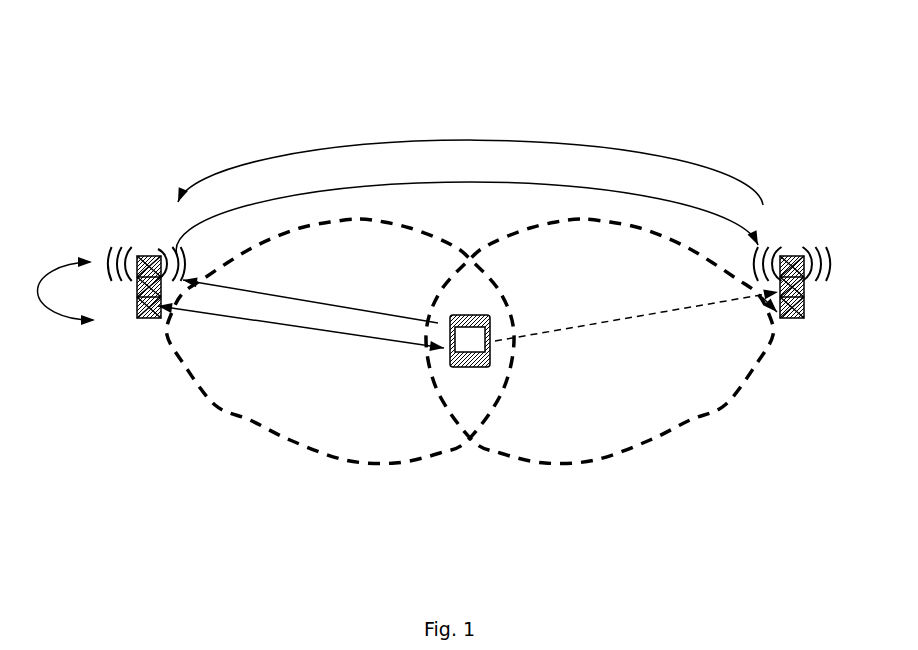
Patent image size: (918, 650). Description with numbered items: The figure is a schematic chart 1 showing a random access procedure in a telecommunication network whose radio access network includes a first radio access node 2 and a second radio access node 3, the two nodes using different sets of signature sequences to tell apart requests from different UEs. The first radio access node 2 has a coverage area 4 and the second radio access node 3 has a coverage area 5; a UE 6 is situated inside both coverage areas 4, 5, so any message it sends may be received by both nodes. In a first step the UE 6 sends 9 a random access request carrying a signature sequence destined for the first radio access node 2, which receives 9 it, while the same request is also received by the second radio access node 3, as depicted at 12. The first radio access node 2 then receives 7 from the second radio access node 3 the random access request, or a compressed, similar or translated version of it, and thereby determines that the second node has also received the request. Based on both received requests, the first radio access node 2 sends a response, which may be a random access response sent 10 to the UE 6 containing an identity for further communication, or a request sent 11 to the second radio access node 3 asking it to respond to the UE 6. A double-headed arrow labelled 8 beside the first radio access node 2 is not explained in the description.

The schematic chart 1 is at (693, 95).
The first radio access node 2 is at (143, 318).
The second radio access node 3 is at (791, 320).
The coverage area of the first radio access node 4 is at (250, 418).
The coverage area of the second radio access node 5 is at (690, 418).
The UE 6 is at (470, 367).
The receipt of random access request from second radio access node 7 is at (470, 154).
The base station configuration change 8 is at (64, 282).
The sending of random access request 9 is at (310, 296).
The random access response sent to UE 10 is at (301, 333).
The request sent to second radio access node 11 is at (467, 203).
The receipt of random access request by second radio access node 12 is at (636, 311).